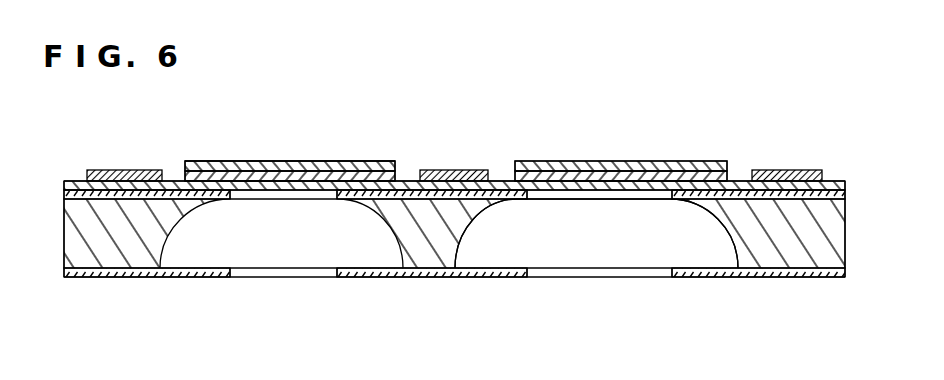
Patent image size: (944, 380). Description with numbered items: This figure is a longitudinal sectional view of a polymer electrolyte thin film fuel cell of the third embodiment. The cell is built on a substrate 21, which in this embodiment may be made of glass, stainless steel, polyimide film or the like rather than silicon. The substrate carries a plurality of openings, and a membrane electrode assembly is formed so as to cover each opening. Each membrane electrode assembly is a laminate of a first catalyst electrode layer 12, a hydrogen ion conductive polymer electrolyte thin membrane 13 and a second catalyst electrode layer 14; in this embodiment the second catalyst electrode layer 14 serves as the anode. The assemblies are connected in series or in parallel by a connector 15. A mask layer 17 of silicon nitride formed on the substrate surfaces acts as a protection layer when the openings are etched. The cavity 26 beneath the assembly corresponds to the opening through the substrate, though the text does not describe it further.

The first catalyst electrode layer 12 is at (280, 181).
The hydrogen ion conductive polymer electrolyte thin membrane 13 is at (214, 177).
The second catalyst electrode layer 14 is at (380, 162).
The connector 15 is at (780, 170).
The mask layer 17 is at (406, 181).
The substrate 21 is at (433, 243).
The cavity 26 is at (577, 250).